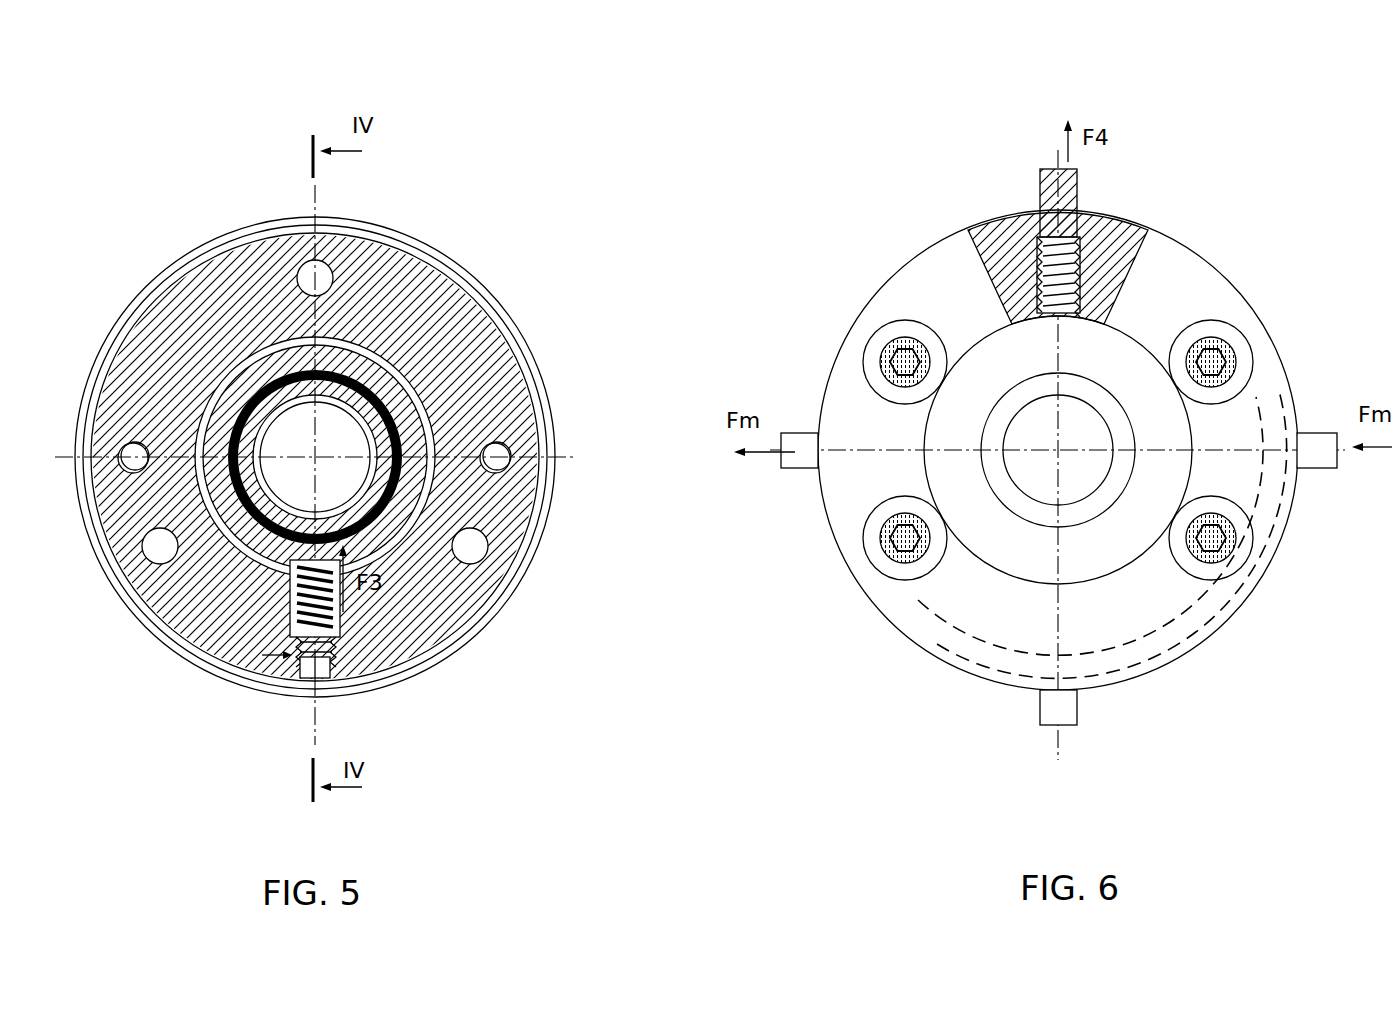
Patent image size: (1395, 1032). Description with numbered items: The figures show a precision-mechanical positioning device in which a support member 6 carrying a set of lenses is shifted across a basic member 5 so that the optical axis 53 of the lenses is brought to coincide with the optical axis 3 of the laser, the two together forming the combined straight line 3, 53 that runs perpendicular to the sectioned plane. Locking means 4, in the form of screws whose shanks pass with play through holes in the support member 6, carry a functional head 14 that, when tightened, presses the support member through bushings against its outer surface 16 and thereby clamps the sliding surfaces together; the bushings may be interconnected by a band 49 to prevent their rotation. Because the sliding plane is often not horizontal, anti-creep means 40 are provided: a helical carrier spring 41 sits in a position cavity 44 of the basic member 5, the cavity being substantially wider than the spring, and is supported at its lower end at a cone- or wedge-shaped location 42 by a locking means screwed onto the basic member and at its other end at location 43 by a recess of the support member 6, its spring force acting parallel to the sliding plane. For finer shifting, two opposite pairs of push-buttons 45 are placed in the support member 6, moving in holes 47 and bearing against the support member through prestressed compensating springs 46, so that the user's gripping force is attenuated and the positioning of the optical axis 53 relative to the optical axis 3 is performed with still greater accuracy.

In FIG. 6, the optical axis 3 is at (1058, 450).
In FIG. 6, the optical axis 53 is at (1058, 450).
In FIG. 6, the locking means 4 is at (1248, 350).
In FIG. 5, the basic member 5 is at (315, 457).
In FIG. 5, the support member 6 is at (319, 457).
In FIG. 6, the support member 6 is at (902, 293).
In FIG. 6, the functional head 14 is at (1248, 318).
In FIG. 6, the outer surface 16 is at (1160, 609).
In FIG. 5, the anti-creep means 40 is at (232, 683).
In FIG. 5, the carrier spring 41 is at (330, 604).
In FIG. 5, the lower point of support 42 is at (323, 641).
In FIG. 5, the upper point of support 43 is at (166, 647).
In FIG. 5, the position cavity 44 is at (217, 667).
In FIG. 6, the push-buttons 45 is at (1063, 198).
In FIG. 6, the compensating spring 46 is at (1043, 258).
In FIG. 6, the holes 47 is at (992, 278).
In FIG. 6, the band 49 is at (1192, 620).